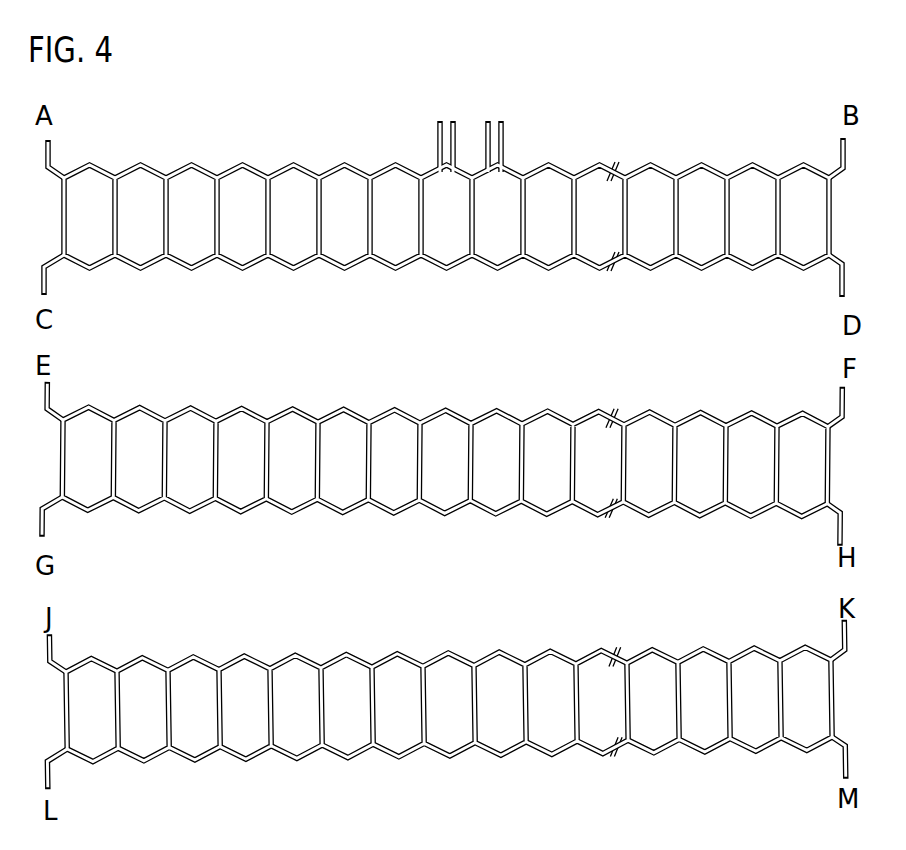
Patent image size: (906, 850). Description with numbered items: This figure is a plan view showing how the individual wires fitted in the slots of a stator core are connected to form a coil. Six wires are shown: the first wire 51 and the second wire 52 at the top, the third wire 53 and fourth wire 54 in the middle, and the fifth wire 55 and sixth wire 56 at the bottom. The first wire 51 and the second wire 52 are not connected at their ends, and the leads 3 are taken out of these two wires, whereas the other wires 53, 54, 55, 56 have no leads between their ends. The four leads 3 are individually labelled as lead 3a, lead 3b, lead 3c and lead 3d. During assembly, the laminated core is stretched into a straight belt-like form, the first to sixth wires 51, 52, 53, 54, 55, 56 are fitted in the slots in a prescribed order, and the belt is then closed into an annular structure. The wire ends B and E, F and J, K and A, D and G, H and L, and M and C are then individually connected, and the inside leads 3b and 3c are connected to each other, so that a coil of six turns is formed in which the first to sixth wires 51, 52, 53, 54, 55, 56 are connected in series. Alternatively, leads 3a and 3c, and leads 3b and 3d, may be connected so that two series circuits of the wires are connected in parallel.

The leads 3 is at (479, 123).
The lead 3a is at (440, 153).
The inside lead 3b is at (456, 158).
The inside lead 3c is at (488, 141).
The lead 3d is at (503, 153).
The first wire 51 is at (48, 147).
The second wire 52 is at (46, 287).
The third wire 53 is at (83, 391).
The fourth wire 54 is at (87, 529).
The fifth wire 55 is at (86, 641).
The sixth wire 56 is at (93, 778).